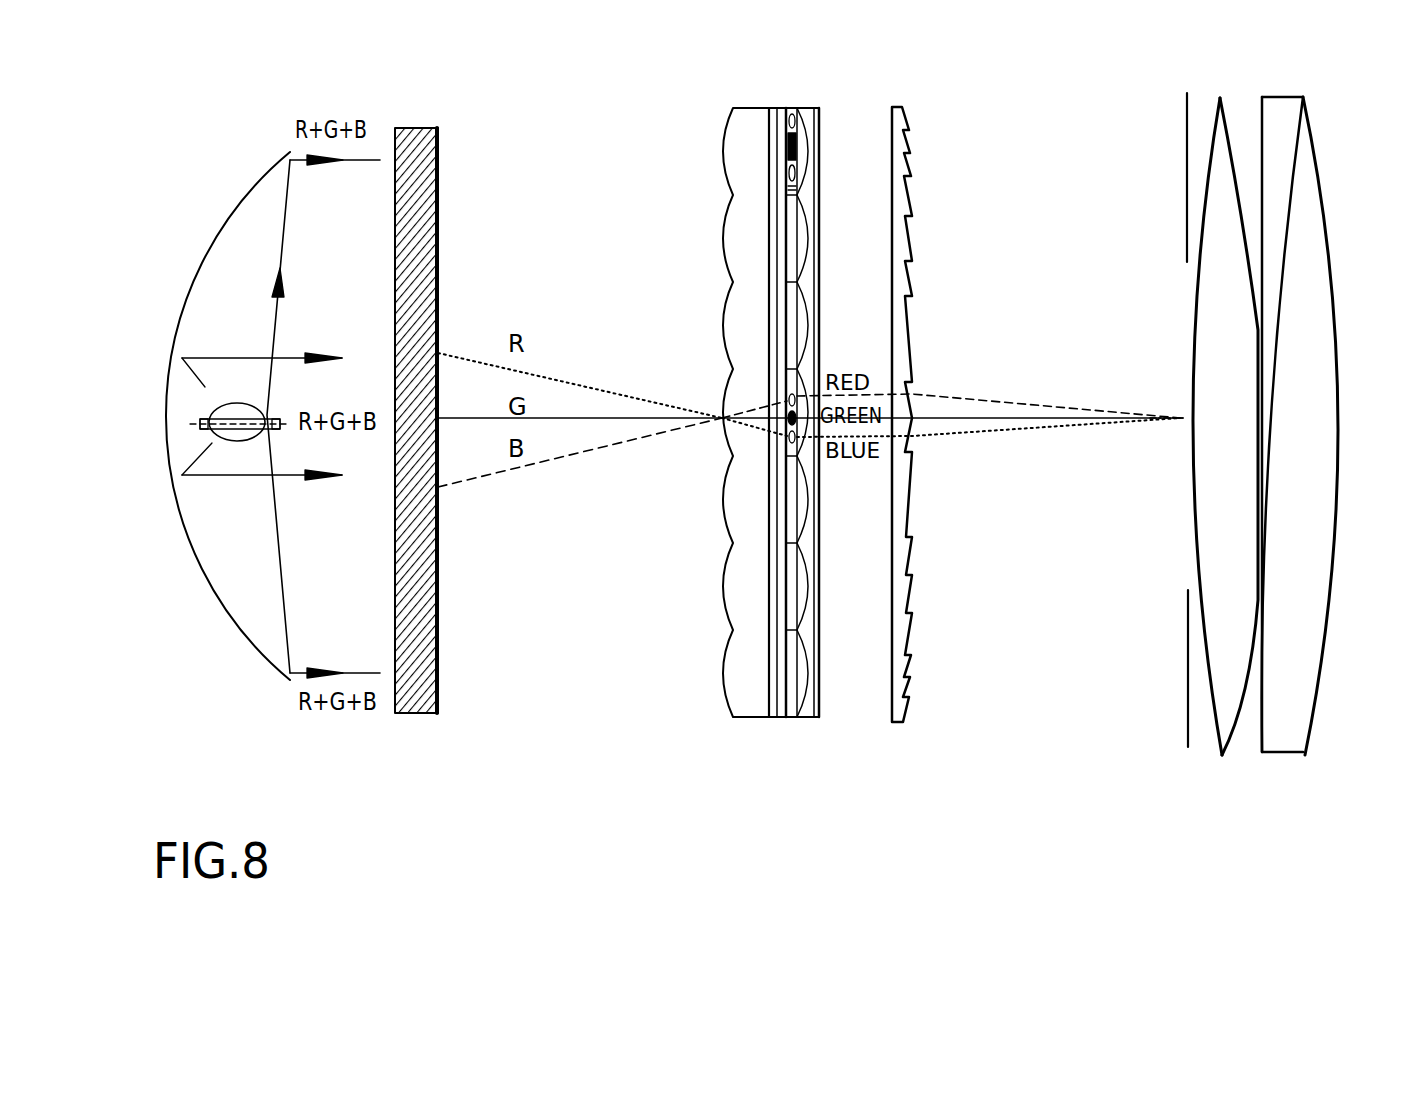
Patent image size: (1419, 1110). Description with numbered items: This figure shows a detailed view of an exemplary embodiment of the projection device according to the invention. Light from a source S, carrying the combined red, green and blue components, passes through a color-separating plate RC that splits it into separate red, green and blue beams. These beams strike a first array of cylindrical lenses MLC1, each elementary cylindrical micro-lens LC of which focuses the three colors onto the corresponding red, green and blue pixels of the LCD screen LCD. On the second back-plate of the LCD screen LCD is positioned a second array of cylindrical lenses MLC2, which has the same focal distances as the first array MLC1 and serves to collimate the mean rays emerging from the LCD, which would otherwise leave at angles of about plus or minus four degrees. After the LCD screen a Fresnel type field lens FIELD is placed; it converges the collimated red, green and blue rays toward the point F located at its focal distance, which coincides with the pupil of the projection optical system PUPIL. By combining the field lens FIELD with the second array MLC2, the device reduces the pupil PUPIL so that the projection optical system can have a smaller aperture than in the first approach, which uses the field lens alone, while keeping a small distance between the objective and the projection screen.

The light source S is at (273, 416).
The dichroic color separation plate RC is at (418, 714).
The elementary cylindrical micro-lens LC is at (712, 137).
The first array of cylindrical lenses MLC1 is at (752, 687).
The LCD screen LCD is at (795, 710).
The second array of cylindrical lenses MLC2 is at (815, 707).
The field lens FIELD is at (910, 720).
The focal distance F is at (1169, 434).
The pupil of the projection optical system PUPIL is at (1182, 715).